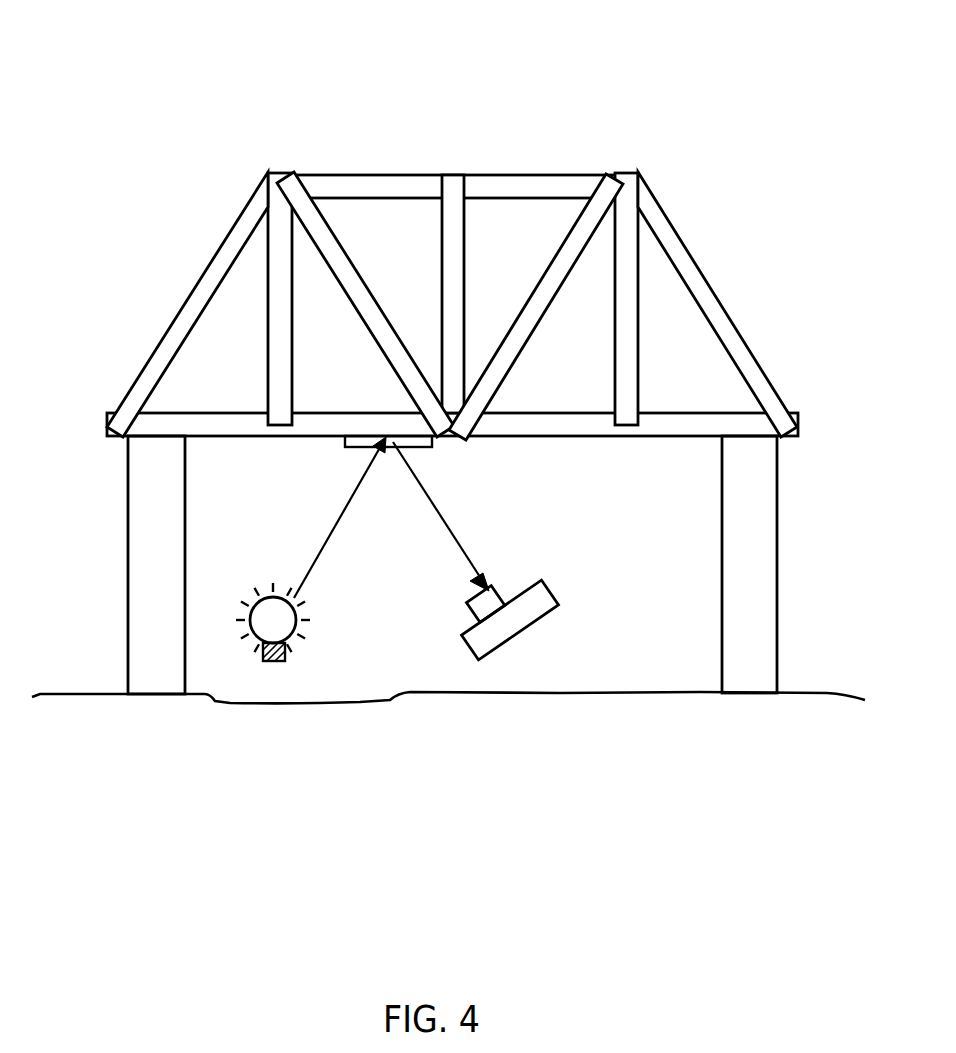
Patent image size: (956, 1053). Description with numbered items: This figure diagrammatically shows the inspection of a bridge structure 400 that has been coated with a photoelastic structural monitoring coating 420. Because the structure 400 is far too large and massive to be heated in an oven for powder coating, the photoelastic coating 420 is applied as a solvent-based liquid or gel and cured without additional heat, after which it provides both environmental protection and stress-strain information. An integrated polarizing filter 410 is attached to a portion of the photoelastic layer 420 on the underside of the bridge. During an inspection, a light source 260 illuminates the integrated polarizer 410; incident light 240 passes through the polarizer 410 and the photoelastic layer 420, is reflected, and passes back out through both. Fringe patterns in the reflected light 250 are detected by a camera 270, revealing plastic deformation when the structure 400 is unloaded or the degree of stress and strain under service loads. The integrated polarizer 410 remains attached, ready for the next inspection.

The structure 400 is at (292, 105).
The photoelastic coating 420 is at (298, 437).
The integrated polarizing filter 410 is at (345, 445).
The incident light 240 is at (333, 532).
The reflected light 250 is at (443, 518).
The light source 260 is at (252, 597).
The camera 270 is at (543, 620).